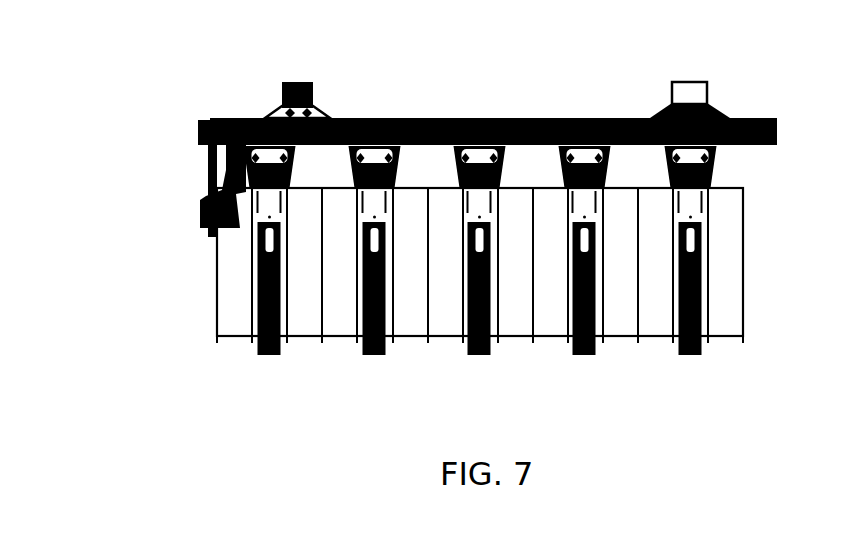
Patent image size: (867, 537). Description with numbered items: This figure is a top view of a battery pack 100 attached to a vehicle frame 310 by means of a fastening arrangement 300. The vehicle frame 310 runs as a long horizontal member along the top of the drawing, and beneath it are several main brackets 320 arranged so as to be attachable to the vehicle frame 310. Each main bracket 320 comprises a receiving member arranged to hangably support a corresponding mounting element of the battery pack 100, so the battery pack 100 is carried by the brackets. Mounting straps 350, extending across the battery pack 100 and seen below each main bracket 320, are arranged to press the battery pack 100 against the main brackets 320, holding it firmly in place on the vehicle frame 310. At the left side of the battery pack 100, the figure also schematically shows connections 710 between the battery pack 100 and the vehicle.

The battery pack 100 is at (227, 303).
The fastening arrangement 300 is at (122, 106).
The vehicle frame 310 is at (530, 120).
The main bracket 320 is at (372, 165).
The mounting strap 350 is at (483, 355).
The connections 710 is at (203, 193).